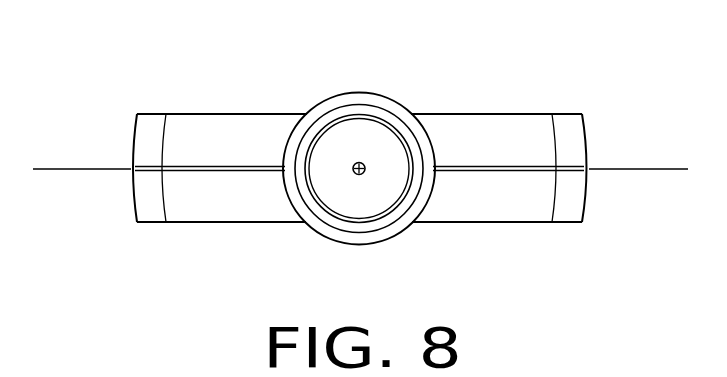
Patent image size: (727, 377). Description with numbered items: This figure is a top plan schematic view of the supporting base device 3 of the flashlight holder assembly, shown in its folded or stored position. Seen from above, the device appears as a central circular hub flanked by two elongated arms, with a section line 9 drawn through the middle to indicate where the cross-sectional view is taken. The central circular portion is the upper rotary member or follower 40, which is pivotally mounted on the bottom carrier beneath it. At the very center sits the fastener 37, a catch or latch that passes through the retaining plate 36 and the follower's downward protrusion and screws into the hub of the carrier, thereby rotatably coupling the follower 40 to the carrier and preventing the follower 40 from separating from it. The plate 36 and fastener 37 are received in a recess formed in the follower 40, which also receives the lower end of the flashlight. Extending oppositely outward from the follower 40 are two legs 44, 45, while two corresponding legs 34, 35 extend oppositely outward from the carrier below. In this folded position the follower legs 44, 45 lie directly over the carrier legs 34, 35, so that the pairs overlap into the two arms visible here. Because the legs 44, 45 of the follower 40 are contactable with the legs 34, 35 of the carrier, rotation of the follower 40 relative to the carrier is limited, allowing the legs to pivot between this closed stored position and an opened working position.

The supporting base device 3 is at (452, 82).
The section line 9- 9 is at (54, 170).
The leg of carrier 34 is at (222, 205).
The leg of carrier 35 is at (523, 137).
The retaining plate 36 is at (390, 140).
The fastener 37 is at (358, 161).
The follower 40 is at (323, 108).
The leg of follower 44 is at (187, 130).
The leg of follower 45 is at (515, 209).